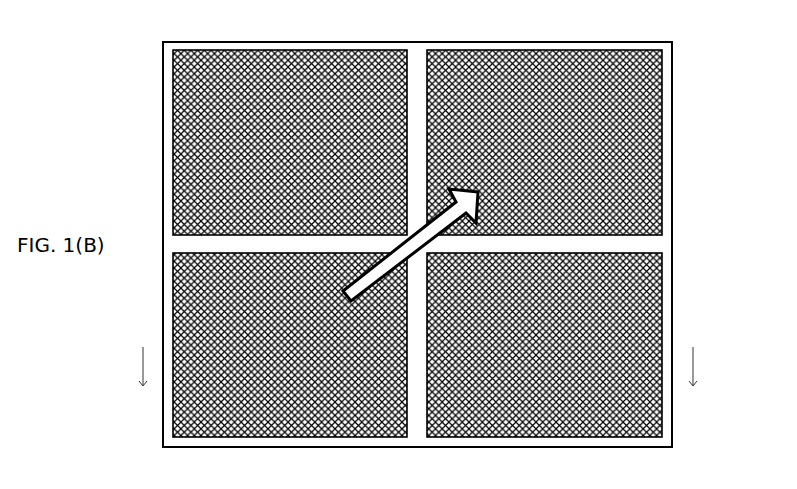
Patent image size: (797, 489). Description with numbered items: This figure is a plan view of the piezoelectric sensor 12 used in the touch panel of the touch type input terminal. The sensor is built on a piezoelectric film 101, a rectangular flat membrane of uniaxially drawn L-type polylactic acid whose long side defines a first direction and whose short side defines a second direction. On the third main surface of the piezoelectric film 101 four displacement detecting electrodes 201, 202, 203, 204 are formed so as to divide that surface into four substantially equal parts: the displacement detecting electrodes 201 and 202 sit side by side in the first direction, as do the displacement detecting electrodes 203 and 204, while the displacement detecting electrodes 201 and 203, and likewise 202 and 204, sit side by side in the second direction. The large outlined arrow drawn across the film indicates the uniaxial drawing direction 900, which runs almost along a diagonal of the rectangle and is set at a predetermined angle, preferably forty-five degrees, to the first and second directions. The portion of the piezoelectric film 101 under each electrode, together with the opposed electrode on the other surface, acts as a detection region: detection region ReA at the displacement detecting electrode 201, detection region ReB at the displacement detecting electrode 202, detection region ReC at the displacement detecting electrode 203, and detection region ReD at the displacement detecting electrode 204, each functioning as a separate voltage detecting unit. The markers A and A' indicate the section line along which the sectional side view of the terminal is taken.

The piezoelectric sensor 12 is at (408, 240).
The piezoelectric film 101 is at (418, 48).
The displacement detecting electrode 201 is at (558, 50).
The displacement detecting electrode 202 is at (335, 50).
The displacement detecting electrode 203 is at (305, 440).
The displacement detecting electrode 204 is at (535, 440).
The uniaxial drawing direction 900 is at (485, 50).
The detection region ReA is at (575, 122).
The detection region ReB is at (244, 122).
The detection region ReC is at (261, 365).
The detection region ReD is at (581, 365).
The section line end A is at (143, 355).
The section line end A' is at (694, 355).